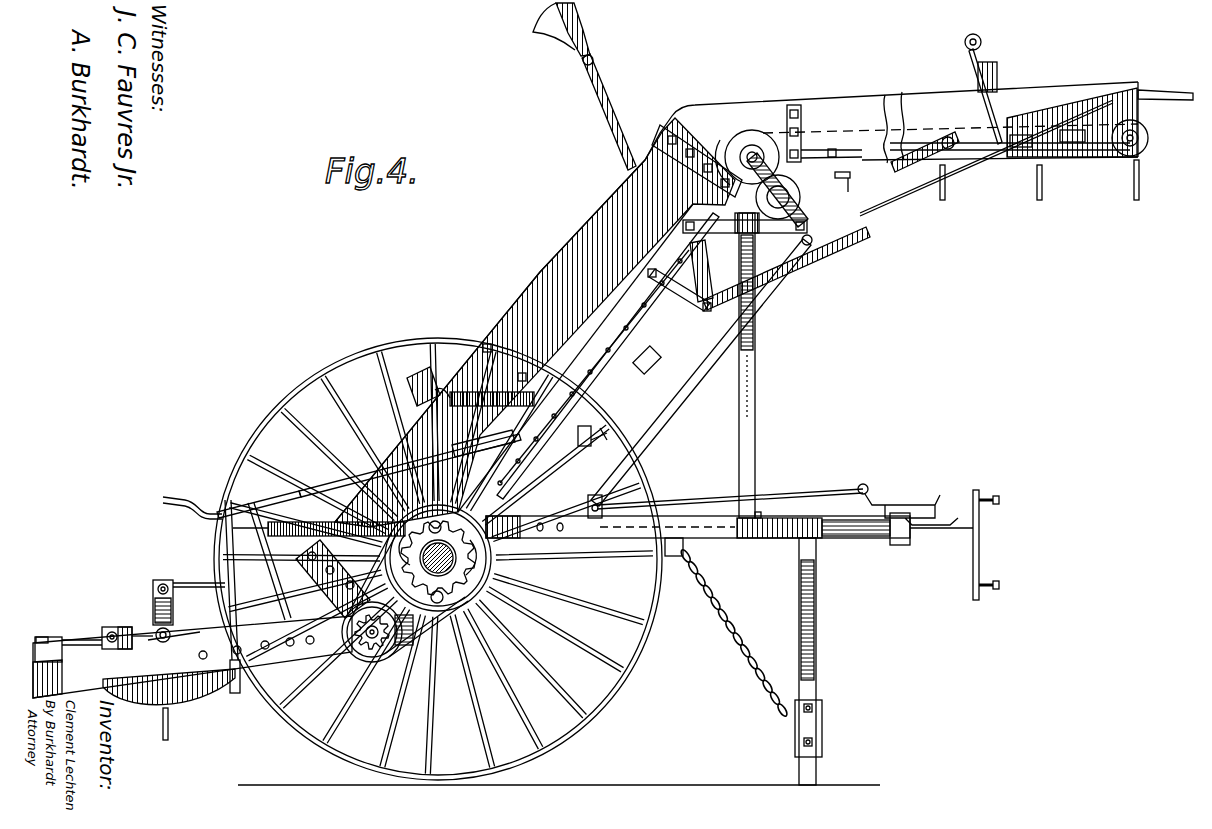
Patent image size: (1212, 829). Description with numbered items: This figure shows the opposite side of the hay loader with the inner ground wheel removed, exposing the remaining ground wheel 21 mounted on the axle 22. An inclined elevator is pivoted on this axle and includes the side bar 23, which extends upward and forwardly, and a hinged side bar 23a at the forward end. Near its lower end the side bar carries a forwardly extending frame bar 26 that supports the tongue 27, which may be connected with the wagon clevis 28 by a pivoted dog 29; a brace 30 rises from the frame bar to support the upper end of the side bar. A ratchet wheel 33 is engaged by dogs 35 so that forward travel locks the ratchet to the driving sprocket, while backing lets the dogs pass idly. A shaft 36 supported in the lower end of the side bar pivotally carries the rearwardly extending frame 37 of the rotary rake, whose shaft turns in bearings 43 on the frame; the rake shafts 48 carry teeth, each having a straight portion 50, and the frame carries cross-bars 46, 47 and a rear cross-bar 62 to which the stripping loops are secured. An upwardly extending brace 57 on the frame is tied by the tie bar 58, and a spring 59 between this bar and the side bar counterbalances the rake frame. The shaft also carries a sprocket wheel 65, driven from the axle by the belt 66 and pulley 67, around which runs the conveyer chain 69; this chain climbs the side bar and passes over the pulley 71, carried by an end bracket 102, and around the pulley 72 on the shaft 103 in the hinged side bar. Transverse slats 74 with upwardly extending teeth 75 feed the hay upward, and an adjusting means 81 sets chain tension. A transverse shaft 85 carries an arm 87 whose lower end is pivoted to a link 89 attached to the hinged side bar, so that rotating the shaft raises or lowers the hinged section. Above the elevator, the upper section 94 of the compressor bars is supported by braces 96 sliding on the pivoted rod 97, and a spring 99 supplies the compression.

The ground wheel 21 is at (640, 474).
The axle 22 is at (470, 565).
The side bar 23 is at (573, 258).
The hinged side bar 23a is at (908, 107).
The frame bar 26 is at (757, 540).
The tongue 27 is at (862, 540).
The wagon clevis 28 is at (970, 540).
The pivoted dog 29 is at (905, 506).
The brace 30 is at (752, 402).
The ratchet wheel 33 is at (438, 559).
The dog 35 is at (410, 467).
The shaft 36 is at (350, 668).
The rearwardly extending frame 37 is at (169, 704).
The bearing 43 is at (157, 630).
The cross-bar 46 is at (192, 657).
The cross-bar 47 is at (160, 582).
The rake shaft 48 is at (172, 584).
The straight portion 50 is at (100, 634).
The brace 57 is at (247, 607).
The tie bar 58 is at (203, 504).
The spring 59 is at (266, 504).
The cross-bar 62 is at (38, 640).
The sprocket wheel 65 is at (415, 652).
The belt 66 is at (441, 640).
The pulley 67 is at (373, 660).
The conveyer chain 69 is at (583, 333).
The pulley 71 is at (750, 145).
The pulley 72 is at (1108, 160).
The transverse slat 74 is at (617, 367).
The tooth 75 is at (650, 362).
The adjusting means 81 is at (1066, 165).
The shaft 85 is at (660, 238).
The arm 87 is at (698, 305).
The link 89 is at (886, 195).
The upper section 94 is at (1166, 93).
The brace 96 is at (1000, 80).
The rod 97 is at (977, 40).
The spring 99 is at (470, 385).
The end bracket 102 is at (801, 197).
The shaft 103 is at (1142, 156).